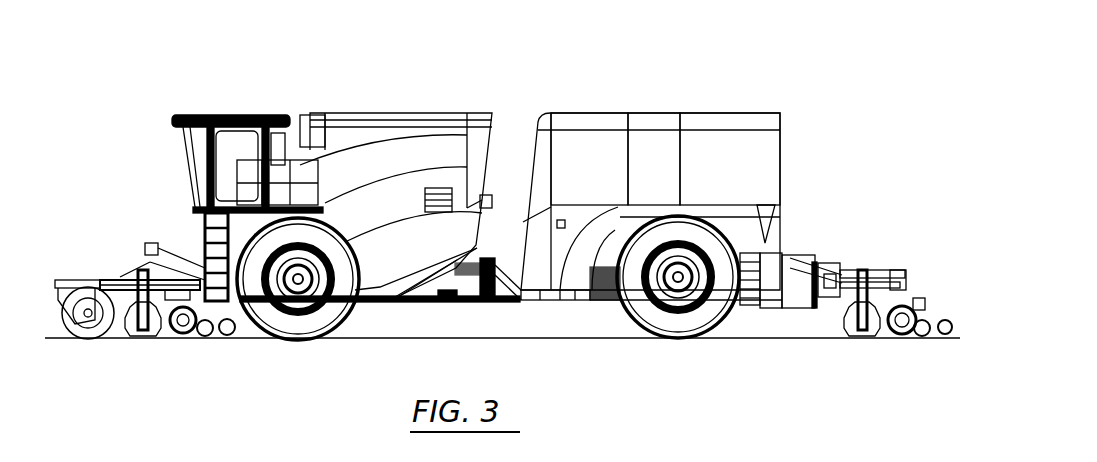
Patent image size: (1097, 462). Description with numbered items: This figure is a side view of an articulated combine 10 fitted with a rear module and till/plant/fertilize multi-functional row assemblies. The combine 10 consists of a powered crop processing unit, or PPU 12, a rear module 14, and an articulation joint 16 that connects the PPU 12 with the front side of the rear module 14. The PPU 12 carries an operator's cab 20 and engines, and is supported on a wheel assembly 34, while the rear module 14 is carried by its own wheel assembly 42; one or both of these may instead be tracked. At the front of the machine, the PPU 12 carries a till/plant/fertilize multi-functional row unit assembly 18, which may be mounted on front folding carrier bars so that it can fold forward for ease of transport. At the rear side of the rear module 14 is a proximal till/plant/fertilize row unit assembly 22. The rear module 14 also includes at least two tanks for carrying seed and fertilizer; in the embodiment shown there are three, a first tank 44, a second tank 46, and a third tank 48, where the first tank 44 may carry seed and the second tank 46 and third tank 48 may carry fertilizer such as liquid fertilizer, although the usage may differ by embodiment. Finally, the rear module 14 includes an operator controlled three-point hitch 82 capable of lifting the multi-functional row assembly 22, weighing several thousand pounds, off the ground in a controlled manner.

The articulated combine 10 is at (393, 102).
The powered PPU (crop processing unit) 12 is at (136, 129).
The rear module 14 is at (769, 95).
The articulation joint 16 is at (445, 311).
The till/plant/fertilize multi-functional row unit assembly 18 is at (123, 253).
The operator's cab 20 is at (232, 113).
The proximal till/plant/fertilize row unit assembly 22 is at (874, 258).
The wheel assembly 34 is at (297, 325).
The wheel assembly 42 is at (682, 325).
The first tank 44 is at (588, 143).
The second tank 46 is at (658, 143).
The third tank 48 is at (736, 142).
The three-point hitch 82 is at (815, 262).